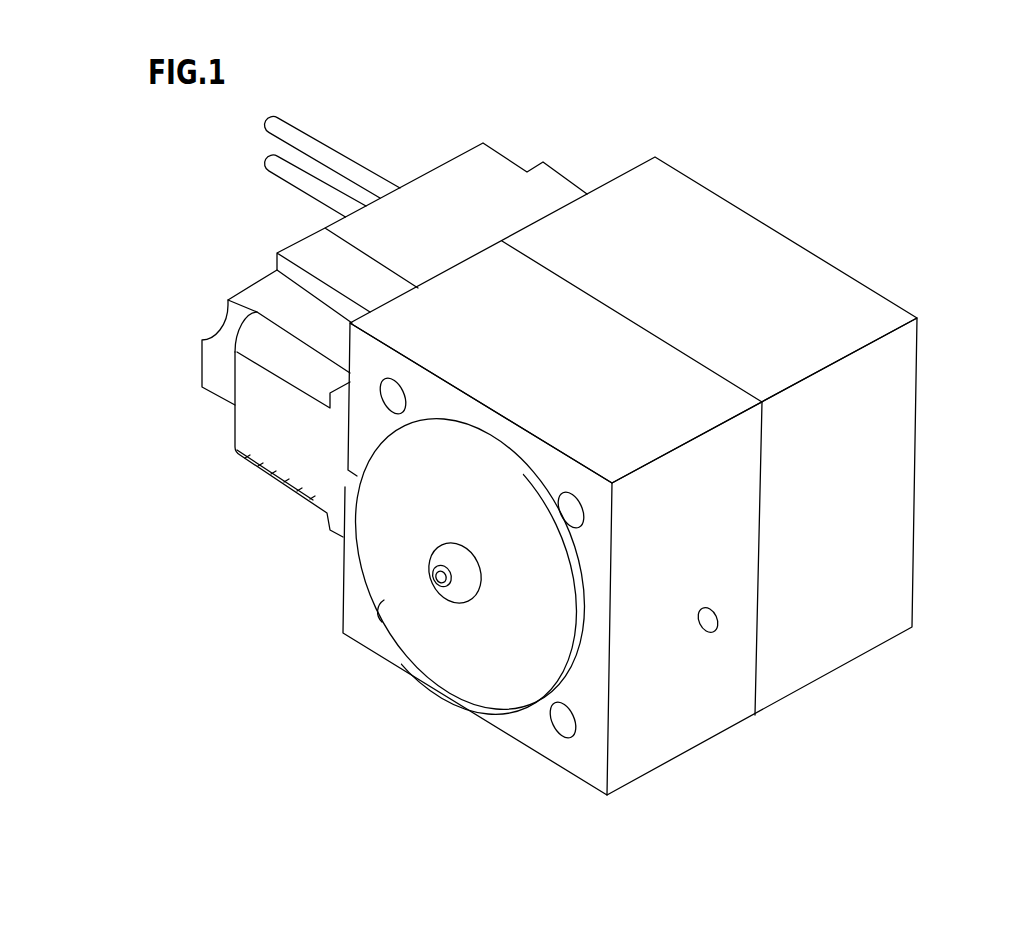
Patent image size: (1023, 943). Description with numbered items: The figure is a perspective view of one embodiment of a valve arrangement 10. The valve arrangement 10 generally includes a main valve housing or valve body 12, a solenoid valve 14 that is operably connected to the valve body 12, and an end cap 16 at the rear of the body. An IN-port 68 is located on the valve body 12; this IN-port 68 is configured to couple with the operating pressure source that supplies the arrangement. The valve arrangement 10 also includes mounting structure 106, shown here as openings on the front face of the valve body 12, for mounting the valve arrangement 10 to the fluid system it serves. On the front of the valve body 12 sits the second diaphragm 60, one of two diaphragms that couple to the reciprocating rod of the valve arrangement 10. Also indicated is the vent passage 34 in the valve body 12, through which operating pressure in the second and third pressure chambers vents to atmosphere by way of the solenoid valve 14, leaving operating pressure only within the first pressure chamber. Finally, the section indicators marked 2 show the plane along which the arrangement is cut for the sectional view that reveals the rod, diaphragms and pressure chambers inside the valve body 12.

The valve arrangement 10 is at (868, 213).
The valve body 12 is at (672, 723).
The solenoid valve 14 is at (493, 187).
The end cap 16 is at (862, 507).
The vent passage 34 is at (340, 482).
The second diaphragm 60 is at (470, 680).
The IN-port 68 is at (710, 628).
The mounting structure 106 is at (562, 495).
The section line 2- 2 is at (797, 867).